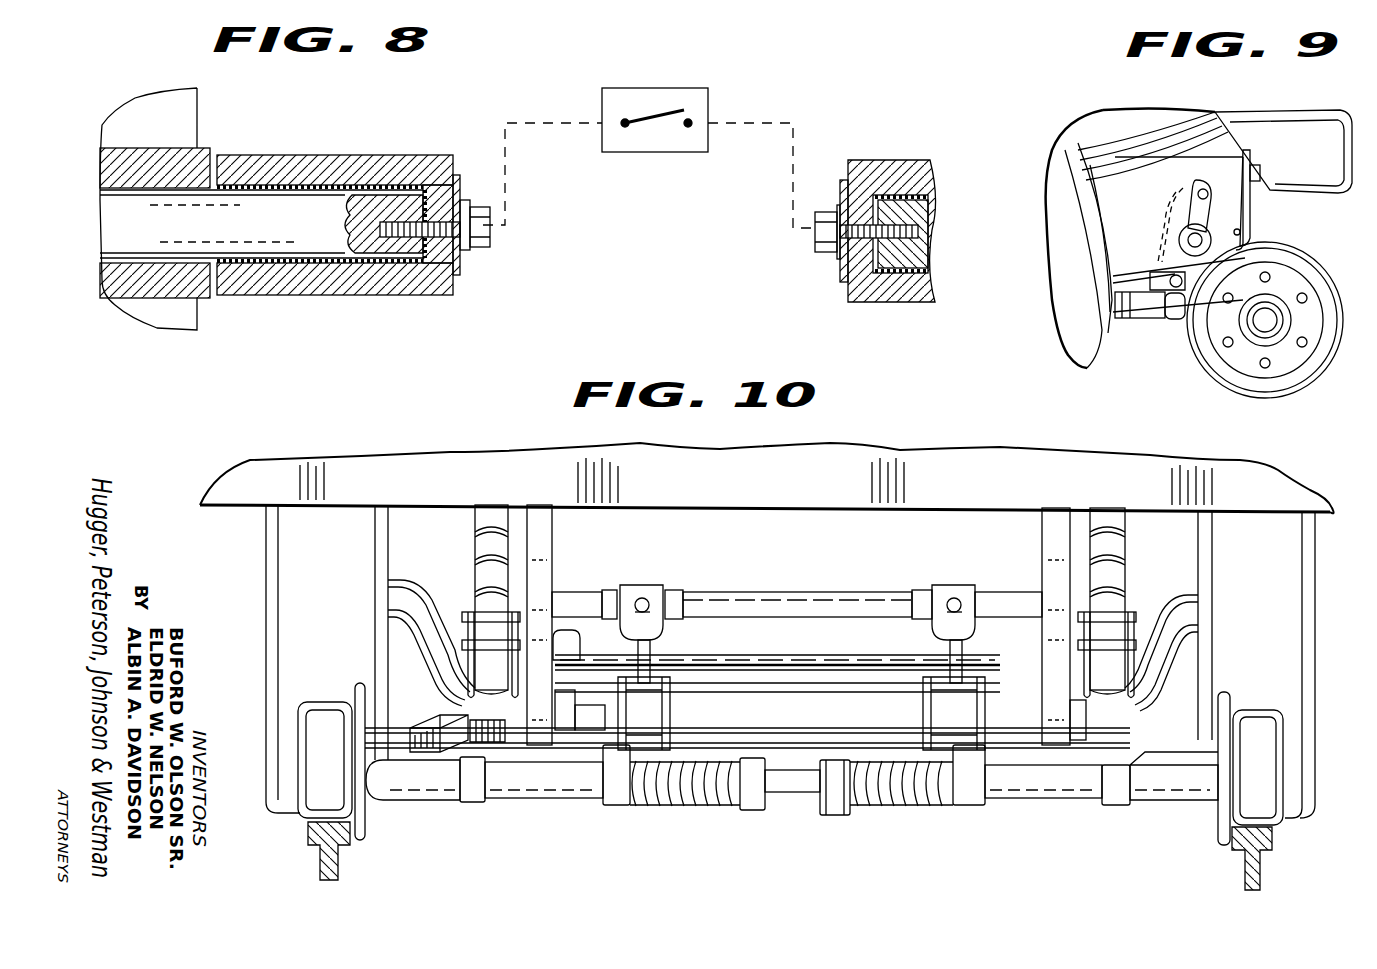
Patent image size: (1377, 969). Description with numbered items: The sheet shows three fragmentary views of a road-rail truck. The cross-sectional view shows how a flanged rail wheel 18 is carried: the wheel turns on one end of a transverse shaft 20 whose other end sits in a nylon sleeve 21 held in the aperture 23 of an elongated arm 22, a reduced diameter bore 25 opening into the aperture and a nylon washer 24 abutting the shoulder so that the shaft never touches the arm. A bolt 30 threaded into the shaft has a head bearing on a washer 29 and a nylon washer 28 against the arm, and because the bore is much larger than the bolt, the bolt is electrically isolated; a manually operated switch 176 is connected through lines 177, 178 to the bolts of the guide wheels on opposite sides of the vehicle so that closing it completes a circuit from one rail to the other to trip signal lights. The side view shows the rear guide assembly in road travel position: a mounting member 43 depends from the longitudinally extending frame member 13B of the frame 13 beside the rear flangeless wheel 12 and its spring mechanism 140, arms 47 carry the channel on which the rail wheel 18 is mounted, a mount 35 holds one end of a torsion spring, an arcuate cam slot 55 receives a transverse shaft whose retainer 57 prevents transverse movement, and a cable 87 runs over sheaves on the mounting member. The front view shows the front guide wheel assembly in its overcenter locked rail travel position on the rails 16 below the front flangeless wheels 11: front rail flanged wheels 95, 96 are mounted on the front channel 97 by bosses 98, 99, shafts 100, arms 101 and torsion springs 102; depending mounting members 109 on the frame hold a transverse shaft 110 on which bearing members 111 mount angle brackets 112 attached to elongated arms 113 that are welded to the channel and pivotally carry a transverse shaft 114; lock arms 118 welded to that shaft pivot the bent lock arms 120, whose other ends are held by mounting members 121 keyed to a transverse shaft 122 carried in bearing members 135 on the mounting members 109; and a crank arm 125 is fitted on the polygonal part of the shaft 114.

In FIG. 10, the front flangeless wheels 11 is at (285, 580).
In FIG. 9, the rear flangeless wheels 12 is at (1073, 310).
In FIG. 9, the frame 13 is at (1100, 132).
In FIG. 9, the longitudinally extending frame member 13B is at (1230, 150).
In FIG. 10, the rails 16 is at (338, 862).
In FIG. 8, the flanged rail wheel 18 is at (180, 320).
In FIG. 9, the flanged rail wheel 18 is at (1298, 262).
In FIG. 8, the transverse shaft 20 is at (292, 236).
In FIG. 8, the nylon sleeve 21 is at (272, 185).
In FIG. 8, the elongated arm 22 is at (352, 162).
In FIG. 8, the aperture 23 is at (405, 185).
In FIG. 8, the nylon washer 24 is at (440, 270).
In FIG. 8, the reduced diameter bore 25 is at (432, 185).
In FIG. 8, the nylon washer 28 is at (458, 268).
In FIG. 8, the washer 29 is at (468, 250).
In FIG. 8, the bolt 30 is at (480, 230).
In FIG. 10, the mount 35 is at (835, 815).
In FIG. 9, the mounting member 43 is at (1113, 202).
In FIG. 9, the arms 47 is at (1125, 318).
In FIG. 9, the arcuate cam slot 55 is at (1200, 160).
In FIG. 9, the retainer 57 is at (1185, 238).
In FIG. 9, the cable 87 is at (1252, 214).
In FIG. 10, the front rail flanged wheel 95 is at (320, 700).
In FIG. 10, the front rail flanged wheel 96 is at (1250, 722).
In FIG. 10, the front channel 97 is at (1013, 790).
In FIG. 10, the boss 98 is at (470, 802).
In FIG. 10, the boss 99 is at (605, 805).
In FIG. 10, the shafts 100 is at (555, 790).
In FIG. 10, the arms 101 is at (438, 792).
In FIG. 10, the torsion springs 102 is at (690, 806).
In FIG. 10, the depending mounting member 109 is at (552, 560).
In FIG. 10, the transverse shaft 110 is at (790, 655).
In FIG. 10, the bearing members 111 is at (570, 650).
In FIG. 10, the angle brackets 112 is at (550, 705).
In FIG. 10, the elongated arm 113 is at (528, 704).
In FIG. 10, the transverse shaft 114 is at (755, 732).
In FIG. 10, the lock arms 118 is at (670, 714).
In FIG. 10, the bent lock arm 120 is at (655, 660).
In FIG. 10, the mounting member 121 is at (642, 597).
In FIG. 10, the transverse shaft 122 is at (810, 596).
In FIG. 10, the crank arm 125 is at (432, 735).
In FIG. 10, the bearing members 135 is at (585, 582).
In FIG. 9, the spring mechanism 140 is at (1140, 142).
In FIG. 10, the spring mechanism 140 is at (478, 548).
In FIG. 8, the manually operated switch 176 is at (635, 88).
In FIG. 8, the line 177 is at (505, 153).
In FIG. 8, the line 178 is at (795, 150).